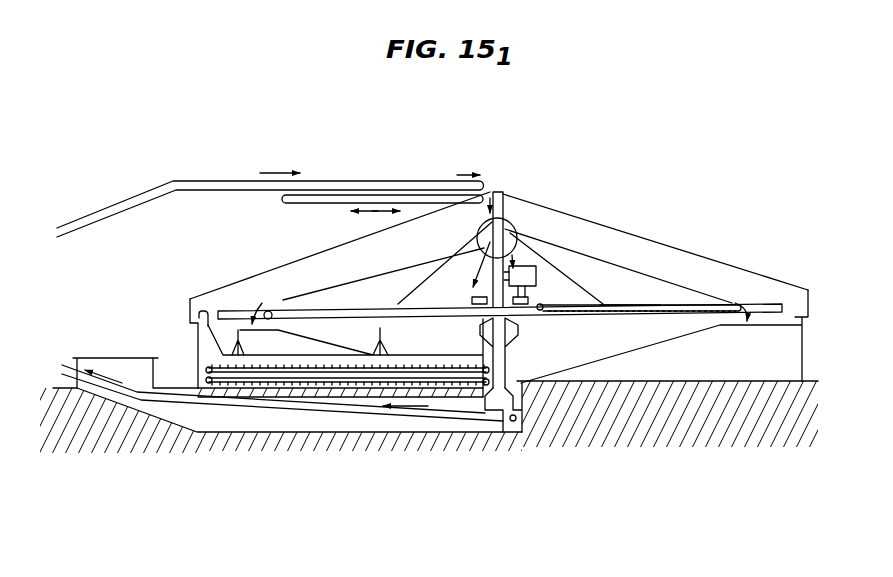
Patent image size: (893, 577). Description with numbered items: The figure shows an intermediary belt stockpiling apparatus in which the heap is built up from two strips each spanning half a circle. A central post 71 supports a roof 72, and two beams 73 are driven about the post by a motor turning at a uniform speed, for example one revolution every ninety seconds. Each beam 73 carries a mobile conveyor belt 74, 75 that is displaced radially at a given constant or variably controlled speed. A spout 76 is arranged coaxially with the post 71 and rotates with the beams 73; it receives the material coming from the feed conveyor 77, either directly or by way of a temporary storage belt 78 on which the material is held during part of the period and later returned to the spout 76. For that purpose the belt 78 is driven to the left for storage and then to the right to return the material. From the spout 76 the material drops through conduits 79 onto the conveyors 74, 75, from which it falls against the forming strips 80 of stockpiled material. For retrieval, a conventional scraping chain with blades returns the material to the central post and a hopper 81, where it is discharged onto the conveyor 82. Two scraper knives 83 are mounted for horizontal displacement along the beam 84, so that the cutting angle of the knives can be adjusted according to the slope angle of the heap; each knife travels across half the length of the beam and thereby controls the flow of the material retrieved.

The central post 71 is at (503, 362).
The roof 72 is at (679, 251).
The beam 73 is at (644, 312).
The mobile conveyor belt 74 is at (372, 305).
The mobile conveyor belt 75 is at (628, 300).
The spout 76 is at (510, 246).
The feed conveyor 77 is at (104, 213).
The temporary storage belt 78 is at (349, 200).
The conduit 79 is at (478, 224).
The forming strip 80 is at (276, 328).
The hopper 81 is at (501, 400).
The conveyor 82 is at (355, 413).
The scraper knife 83 is at (376, 333).
The beam 84 is at (433, 355).